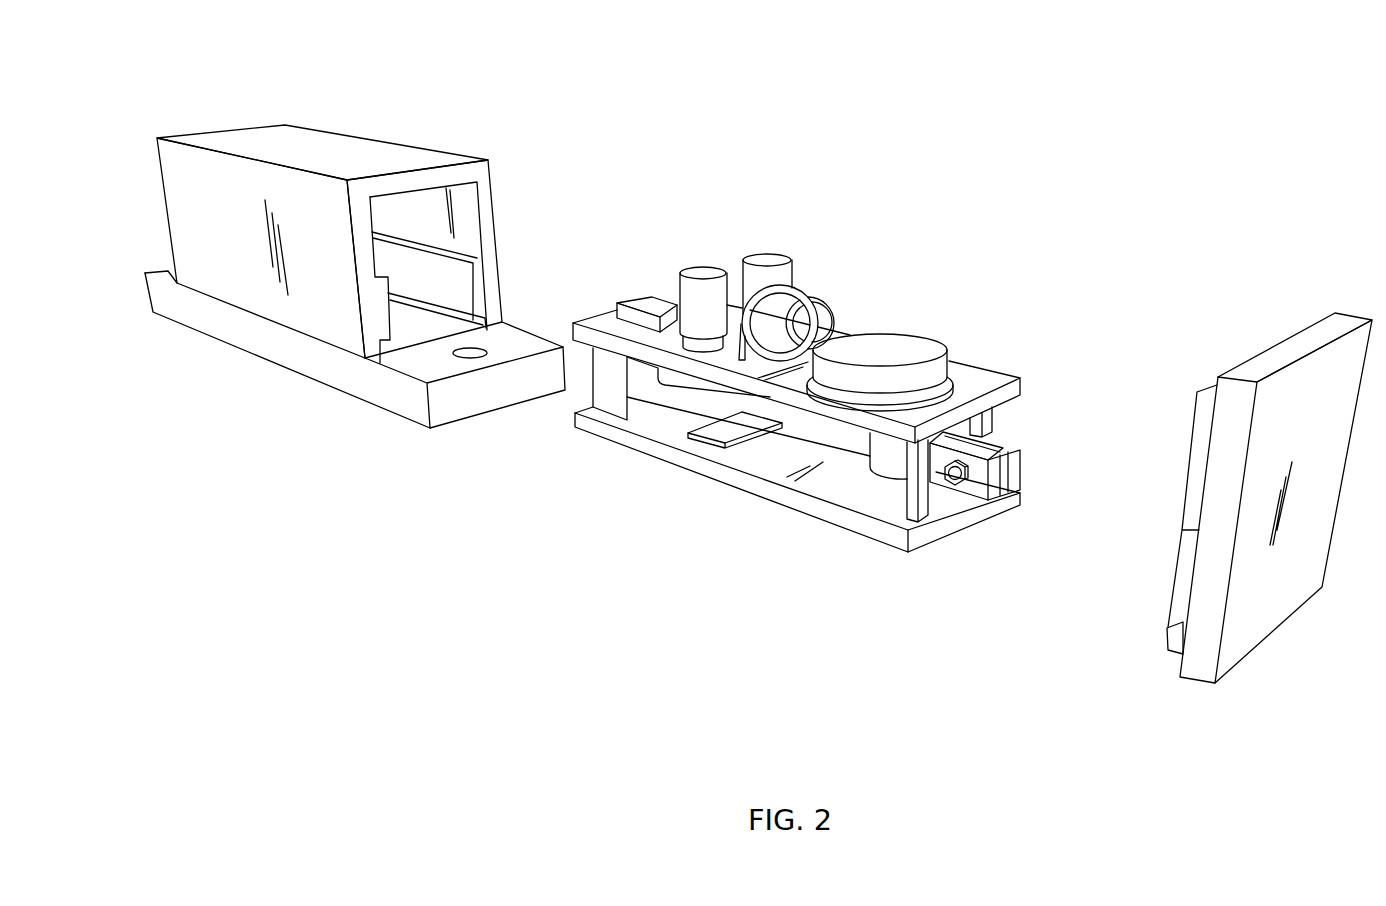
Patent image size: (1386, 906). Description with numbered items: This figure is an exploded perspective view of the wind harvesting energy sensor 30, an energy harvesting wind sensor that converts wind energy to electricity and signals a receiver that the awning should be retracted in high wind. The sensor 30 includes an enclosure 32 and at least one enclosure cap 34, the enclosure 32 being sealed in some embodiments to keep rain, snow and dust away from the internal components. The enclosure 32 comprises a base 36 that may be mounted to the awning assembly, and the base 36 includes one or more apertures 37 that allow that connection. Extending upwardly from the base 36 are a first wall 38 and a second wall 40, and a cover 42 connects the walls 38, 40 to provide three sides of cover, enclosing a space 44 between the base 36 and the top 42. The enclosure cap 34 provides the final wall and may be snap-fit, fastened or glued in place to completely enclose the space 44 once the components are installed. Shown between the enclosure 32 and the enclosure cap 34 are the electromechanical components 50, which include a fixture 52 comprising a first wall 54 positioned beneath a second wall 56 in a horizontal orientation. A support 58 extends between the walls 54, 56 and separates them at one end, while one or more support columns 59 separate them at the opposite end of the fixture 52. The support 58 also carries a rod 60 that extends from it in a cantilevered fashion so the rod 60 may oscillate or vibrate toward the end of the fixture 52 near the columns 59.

The wind harvesting energy sensor 30 is at (1084, 96).
The enclosure 32 is at (328, 429).
The enclosure cap 34 is at (1301, 660).
The base 36 is at (468, 397).
The apertures 37 is at (485, 352).
The first wall 38 is at (182, 230).
The second wall 40 is at (495, 225).
The cover 42 is at (297, 160).
The space 44 is at (429, 201).
The electromechanical components 50 is at (866, 199).
The fixture 52 is at (931, 253).
The first wall 54 is at (833, 512).
The second wall 56 is at (1005, 397).
The support 58 is at (615, 392).
The support columns 59 is at (986, 423).
The rod 60 is at (820, 422).